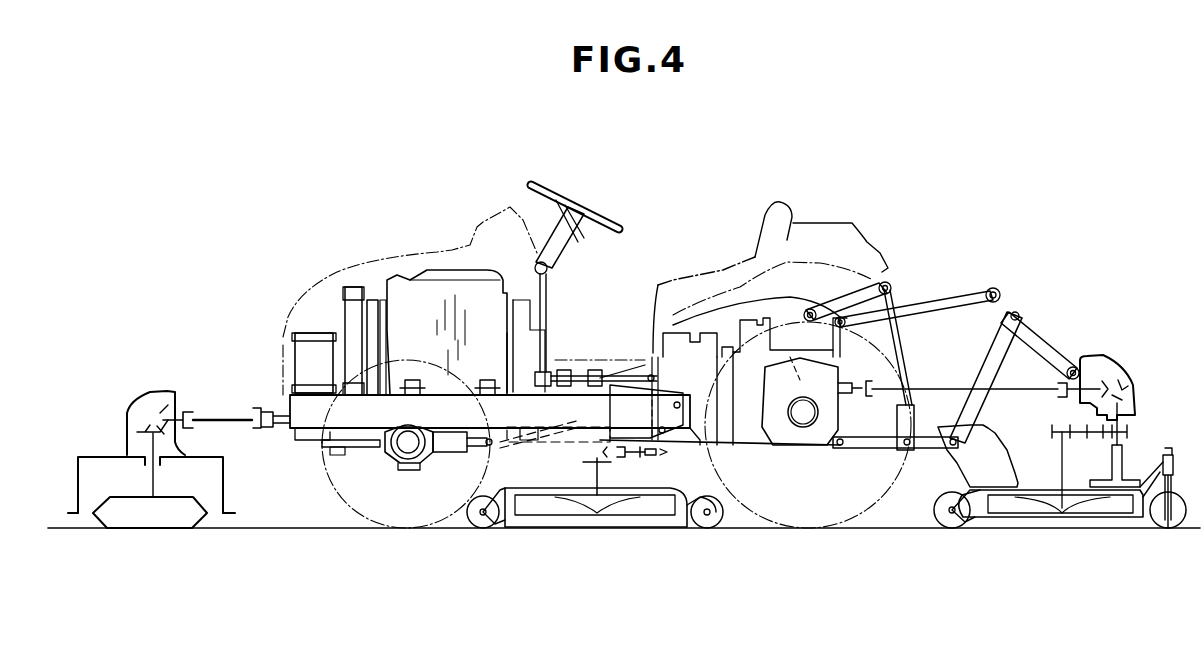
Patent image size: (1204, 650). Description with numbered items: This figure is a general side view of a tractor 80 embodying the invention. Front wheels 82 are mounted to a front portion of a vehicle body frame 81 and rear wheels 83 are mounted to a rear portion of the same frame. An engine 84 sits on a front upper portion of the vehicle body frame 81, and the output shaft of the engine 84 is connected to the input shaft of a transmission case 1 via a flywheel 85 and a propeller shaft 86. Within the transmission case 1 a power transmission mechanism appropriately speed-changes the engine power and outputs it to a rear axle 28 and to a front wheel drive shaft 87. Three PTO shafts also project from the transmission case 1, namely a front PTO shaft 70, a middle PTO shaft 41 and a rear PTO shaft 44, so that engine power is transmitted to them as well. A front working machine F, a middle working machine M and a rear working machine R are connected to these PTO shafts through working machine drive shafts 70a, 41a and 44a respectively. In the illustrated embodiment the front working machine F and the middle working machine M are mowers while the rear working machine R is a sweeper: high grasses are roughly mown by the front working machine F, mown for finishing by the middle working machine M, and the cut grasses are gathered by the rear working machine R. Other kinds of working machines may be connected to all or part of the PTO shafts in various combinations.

The tractor 80 is at (655, 228).
The transmission case 1 is at (752, 433).
The rear axle 28 is at (803, 425).
The middle PTO shaft 41 is at (647, 458).
The working machine drive shaft 41a is at (646, 457).
The rear PTO shaft 44 is at (857, 385).
The working machine drive shaft 44a is at (953, 388).
The front PTO shaft 70 is at (272, 408).
The working machine drive shaft 70a is at (220, 415).
The vehicle body frame 81 is at (353, 422).
The front wheels 82 is at (368, 526).
The rear wheels 83 is at (880, 505).
The engine 84 is at (490, 285).
The flywheel 85 is at (520, 337).
The propeller shaft 86 is at (572, 365).
The front wheel drive shaft 87 is at (557, 440).
The front working machine F is at (141, 391).
The middle working machine M is at (598, 550).
The rear working machine R is at (1060, 552).